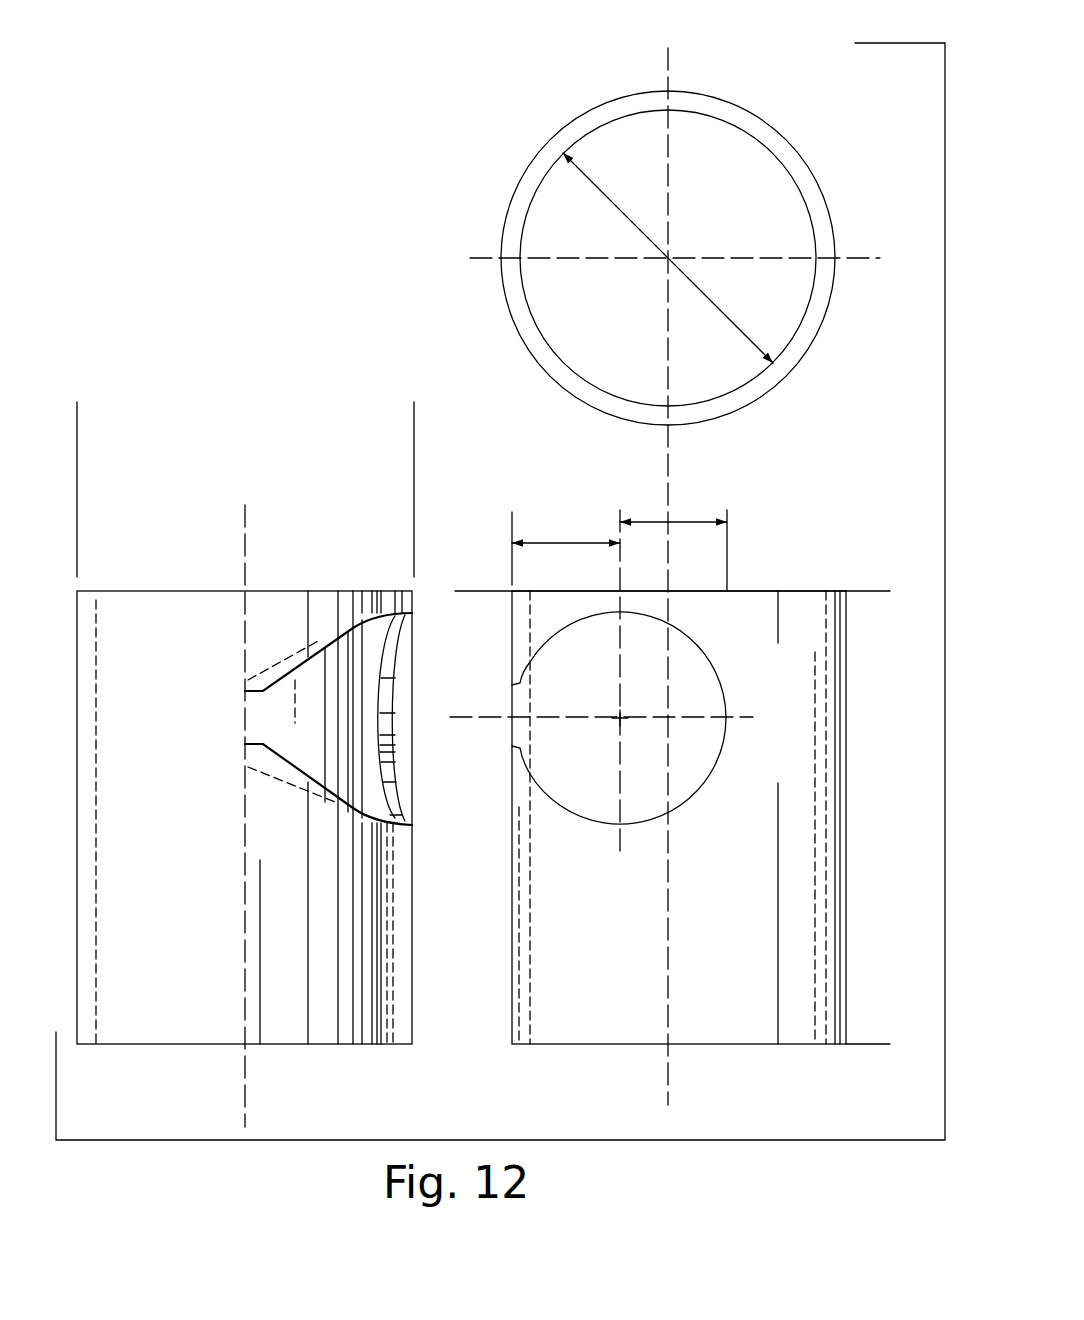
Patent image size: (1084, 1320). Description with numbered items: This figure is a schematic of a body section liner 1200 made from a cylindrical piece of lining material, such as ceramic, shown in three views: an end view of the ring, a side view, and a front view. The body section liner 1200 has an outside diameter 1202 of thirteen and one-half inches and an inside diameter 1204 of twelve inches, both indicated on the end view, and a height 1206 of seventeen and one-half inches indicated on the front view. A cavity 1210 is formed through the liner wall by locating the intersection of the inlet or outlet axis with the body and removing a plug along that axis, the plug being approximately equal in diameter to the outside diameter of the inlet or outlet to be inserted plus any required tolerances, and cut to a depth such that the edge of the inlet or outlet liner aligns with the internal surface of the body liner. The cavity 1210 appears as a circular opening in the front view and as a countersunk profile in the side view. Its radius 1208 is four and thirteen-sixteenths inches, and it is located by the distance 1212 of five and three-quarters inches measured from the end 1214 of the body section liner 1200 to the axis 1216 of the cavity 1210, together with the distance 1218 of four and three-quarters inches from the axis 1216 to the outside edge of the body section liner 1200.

The body section liner 1200 is at (465, 222).
The outside diameter 1202 is at (414, 437).
The inside diameter 1204 is at (630, 220).
The height 1206 is at (875, 1044).
The radius 1208 is at (653, 522).
The cavity 1210 is at (697, 640).
The distance 1212 is at (463, 591).
The end 1214 is at (773, 591).
The axis 1216 is at (618, 720).
The distance 1218 is at (570, 543).